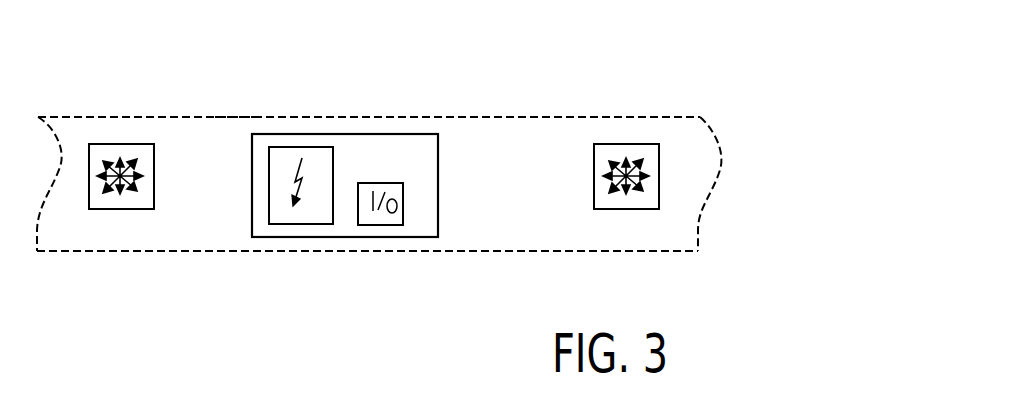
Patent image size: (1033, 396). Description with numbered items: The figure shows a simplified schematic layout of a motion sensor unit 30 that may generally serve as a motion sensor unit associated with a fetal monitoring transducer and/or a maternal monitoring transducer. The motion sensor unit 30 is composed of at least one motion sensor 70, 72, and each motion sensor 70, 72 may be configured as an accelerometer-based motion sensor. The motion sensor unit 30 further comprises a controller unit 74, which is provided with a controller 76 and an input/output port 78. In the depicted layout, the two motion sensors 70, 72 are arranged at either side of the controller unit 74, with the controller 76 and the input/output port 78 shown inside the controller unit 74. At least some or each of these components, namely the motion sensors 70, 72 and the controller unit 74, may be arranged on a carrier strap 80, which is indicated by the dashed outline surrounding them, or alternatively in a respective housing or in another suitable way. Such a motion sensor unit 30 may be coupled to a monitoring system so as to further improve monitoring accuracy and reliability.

The motion sensor unit 30 is at (250, 266).
The motion sensor 70 is at (121, 144).
The motion sensor 72 is at (625, 144).
The controller unit 74 is at (409, 124).
The controller 76 is at (306, 224).
The input/output port 78 is at (384, 225).
The carrier strap 80 is at (220, 133).